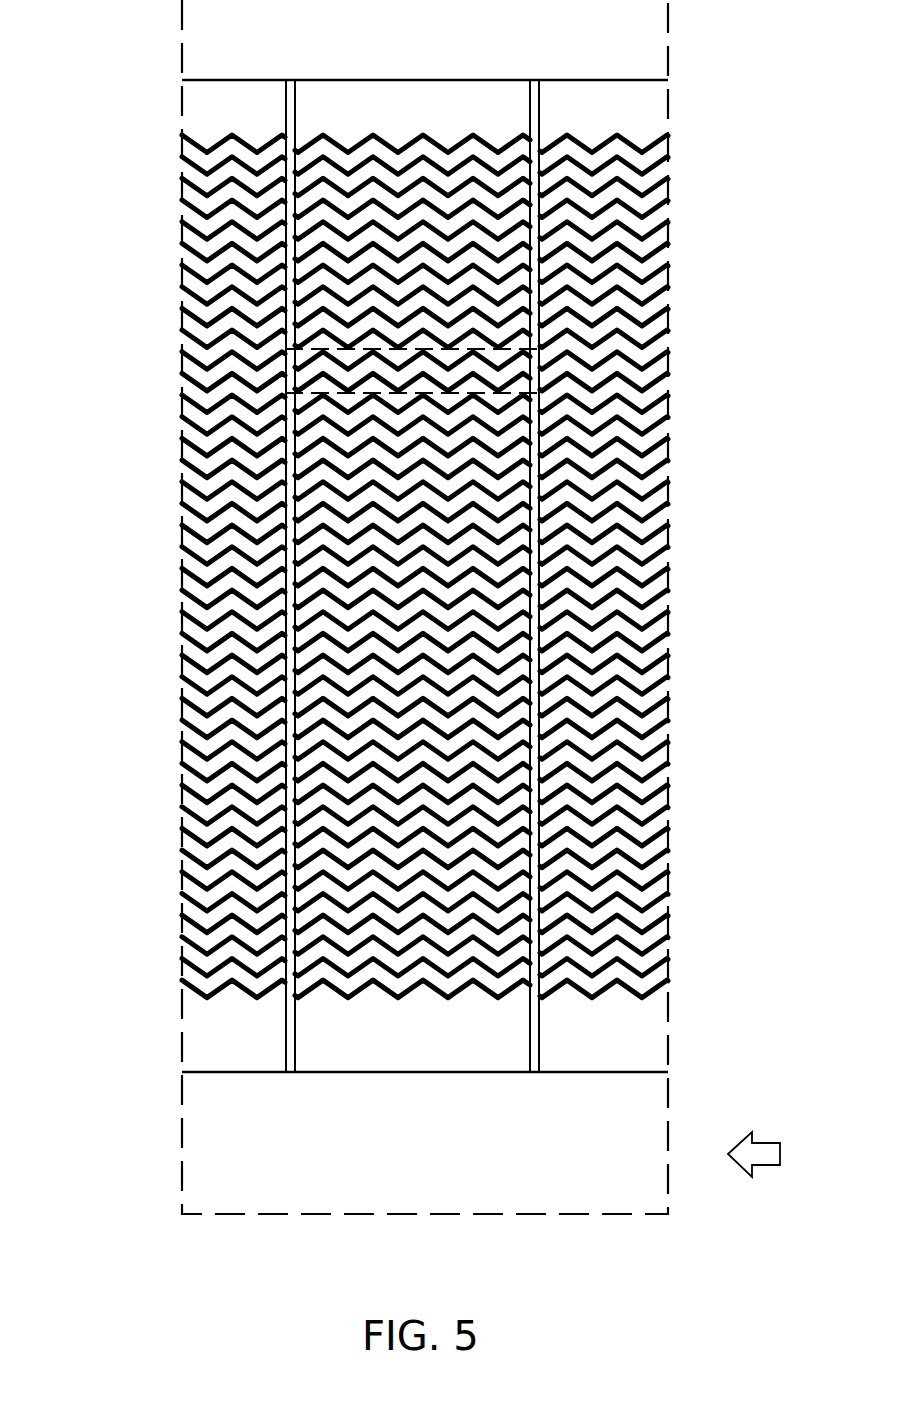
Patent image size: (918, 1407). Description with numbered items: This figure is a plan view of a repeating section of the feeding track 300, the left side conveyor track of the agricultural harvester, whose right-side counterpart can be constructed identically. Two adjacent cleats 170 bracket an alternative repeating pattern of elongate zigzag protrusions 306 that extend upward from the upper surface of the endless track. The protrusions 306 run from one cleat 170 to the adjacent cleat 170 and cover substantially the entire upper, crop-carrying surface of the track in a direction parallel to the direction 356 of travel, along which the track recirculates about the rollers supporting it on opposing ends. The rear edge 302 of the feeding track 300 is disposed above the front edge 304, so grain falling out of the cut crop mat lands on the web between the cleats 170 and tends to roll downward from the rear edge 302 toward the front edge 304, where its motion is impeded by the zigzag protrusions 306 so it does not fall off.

The feeding track 300 is at (105, 130).
The rear edge 302 is at (220, 80).
The cleats 170 is at (532, 80).
The elongate zigzag protrusions 306 is at (658, 515).
The front edge 304 is at (427, 1073).
The direction of travel 356 is at (780, 1155).